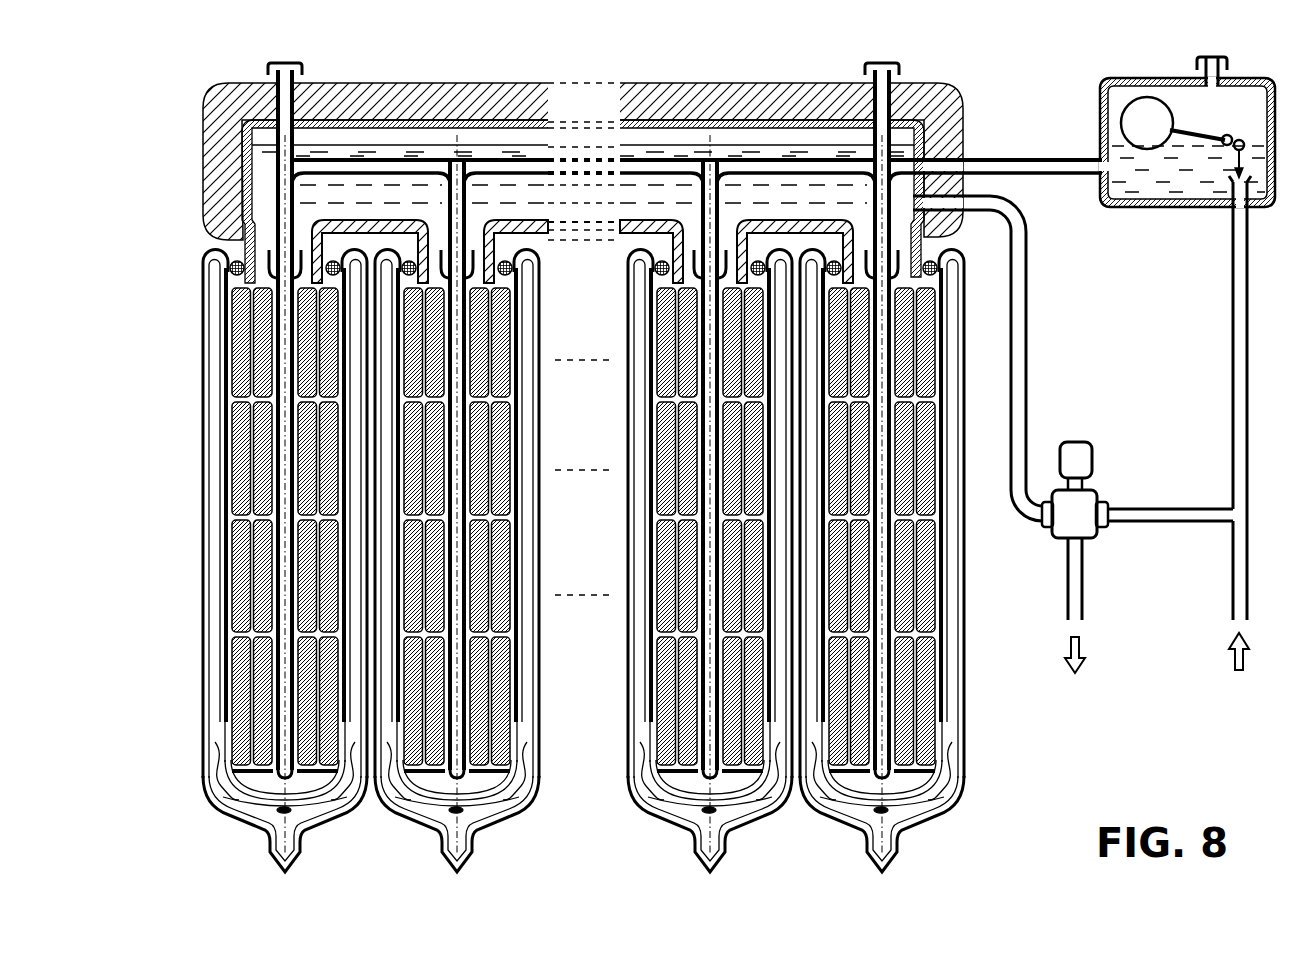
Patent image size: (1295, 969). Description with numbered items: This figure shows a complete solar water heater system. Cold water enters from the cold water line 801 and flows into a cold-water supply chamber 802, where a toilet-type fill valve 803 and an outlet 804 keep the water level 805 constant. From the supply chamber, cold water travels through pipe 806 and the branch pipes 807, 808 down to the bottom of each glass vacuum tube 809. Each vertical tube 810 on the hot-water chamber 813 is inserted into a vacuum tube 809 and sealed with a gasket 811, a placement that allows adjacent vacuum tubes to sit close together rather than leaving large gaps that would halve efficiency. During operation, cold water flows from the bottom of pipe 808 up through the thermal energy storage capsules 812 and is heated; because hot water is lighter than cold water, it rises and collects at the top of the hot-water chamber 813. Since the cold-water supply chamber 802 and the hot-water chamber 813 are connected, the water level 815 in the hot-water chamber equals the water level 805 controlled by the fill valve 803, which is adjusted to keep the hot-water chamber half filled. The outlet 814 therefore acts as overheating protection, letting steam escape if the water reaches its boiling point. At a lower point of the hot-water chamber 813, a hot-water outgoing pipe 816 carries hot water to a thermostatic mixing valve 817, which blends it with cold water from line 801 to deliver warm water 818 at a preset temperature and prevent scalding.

The cold water line 801 is at (1230, 606).
The cold-water supply chamber 802 is at (1105, 80).
The fill valve 803 is at (1207, 152).
The outlet 804 is at (1198, 73).
The water level 805 is at (1118, 137).
The pipe 806 is at (1038, 158).
The branch pipe 807 is at (707, 178).
The branch pipe 808 is at (707, 781).
The glass vacuum tube 809 is at (630, 737).
The vertical tube 810 is at (637, 240).
The gasket 811 is at (652, 268).
The thermal energy storage capsules 812 is at (663, 670).
The hot-water chamber 813 is at (357, 126).
The outlet 814 is at (294, 60).
The water level 815 is at (450, 150).
The hot-water outgoing pipe 816 is at (1025, 232).
The thermostatic mixing valve 817 is at (1083, 440).
The warm water 818 is at (1067, 598).